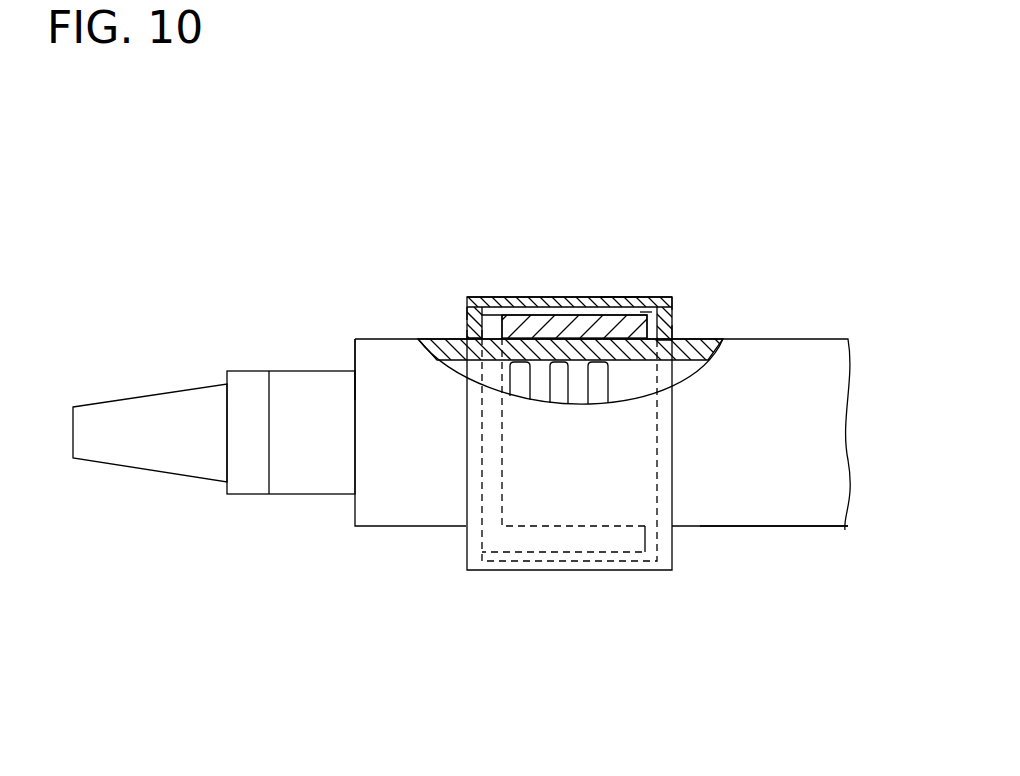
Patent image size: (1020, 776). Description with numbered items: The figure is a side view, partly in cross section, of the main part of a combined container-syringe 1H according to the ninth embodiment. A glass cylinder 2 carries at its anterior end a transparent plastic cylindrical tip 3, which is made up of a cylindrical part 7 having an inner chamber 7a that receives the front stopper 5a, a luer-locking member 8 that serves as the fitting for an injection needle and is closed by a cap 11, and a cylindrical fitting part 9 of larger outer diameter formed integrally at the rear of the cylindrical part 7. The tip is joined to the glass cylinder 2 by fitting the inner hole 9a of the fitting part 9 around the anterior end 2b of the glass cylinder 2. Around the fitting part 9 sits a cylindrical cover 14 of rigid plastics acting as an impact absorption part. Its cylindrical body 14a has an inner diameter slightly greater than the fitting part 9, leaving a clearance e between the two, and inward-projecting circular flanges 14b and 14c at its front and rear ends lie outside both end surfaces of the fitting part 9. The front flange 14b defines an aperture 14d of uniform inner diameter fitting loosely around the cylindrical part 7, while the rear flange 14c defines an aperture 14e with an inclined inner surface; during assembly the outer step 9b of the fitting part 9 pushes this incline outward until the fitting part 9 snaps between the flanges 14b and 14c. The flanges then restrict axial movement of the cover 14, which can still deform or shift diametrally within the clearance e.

The combined container-syringe 1H is at (471, 220).
The glass cylinder 2 is at (765, 528).
The anterior end of the glass cylinder 2b is at (503, 325).
The cylindrical tip 3 is at (405, 534).
The front stopper 5a is at (560, 352).
The cylindrical part 7 is at (370, 339).
The inner chamber 7a is at (457, 364).
The luer-locking member 8 is at (296, 370).
The cylindrical fitting part 9 is at (541, 297).
The inner hole of the fitting part 9a is at (672, 380).
The outer step of the fitting part 9b is at (470, 333).
The cap 11 is at (177, 384).
The cylindrical cover 14 is at (604, 290).
The cylindrical body 14a is at (622, 297).
The circular flange 14b is at (467, 310).
The circular flange 14c is at (672, 303).
The aperture 14d is at (462, 336).
The aperture 14e is at (673, 330).
The clearance e is at (650, 311).